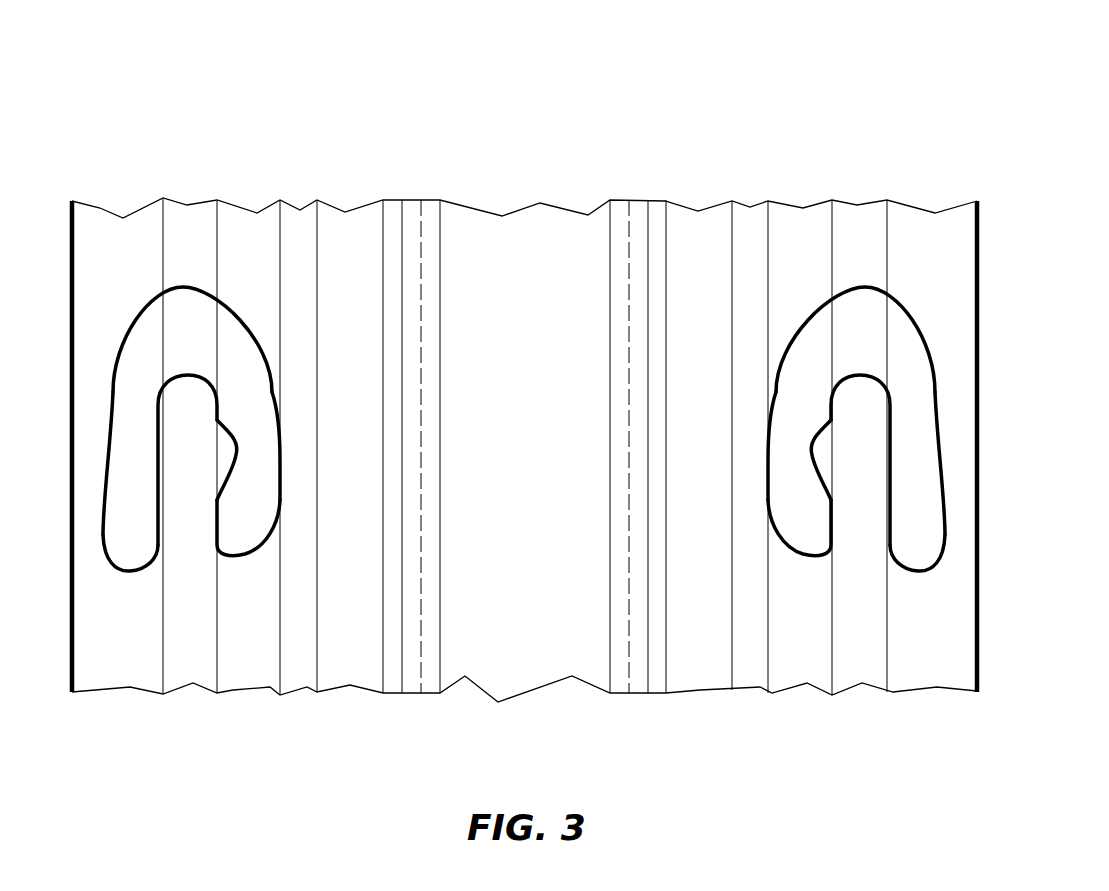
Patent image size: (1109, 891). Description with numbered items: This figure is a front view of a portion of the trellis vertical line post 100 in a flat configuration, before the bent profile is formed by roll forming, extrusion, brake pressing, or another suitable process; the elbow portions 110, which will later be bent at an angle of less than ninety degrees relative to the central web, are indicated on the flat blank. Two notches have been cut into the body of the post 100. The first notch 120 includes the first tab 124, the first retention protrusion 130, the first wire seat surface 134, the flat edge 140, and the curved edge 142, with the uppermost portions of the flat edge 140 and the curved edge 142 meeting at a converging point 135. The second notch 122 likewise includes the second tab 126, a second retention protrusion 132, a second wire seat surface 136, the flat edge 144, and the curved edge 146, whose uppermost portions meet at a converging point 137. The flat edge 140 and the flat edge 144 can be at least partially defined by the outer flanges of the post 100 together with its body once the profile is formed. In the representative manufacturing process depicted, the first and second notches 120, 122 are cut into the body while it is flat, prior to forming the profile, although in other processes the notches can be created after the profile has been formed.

The post 100 is at (622, 143).
The elbow portions 110 is at (703, 683).
The first notch 120 is at (128, 548).
The second notch 122 is at (917, 550).
The first tab 124 is at (182, 448).
The second tab 126 is at (848, 478).
The first retention protrusion 130 is at (227, 462).
The second retention protrusion 132 is at (823, 468).
The first wire seat surface 134 is at (112, 573).
The second wire seat surface 136 is at (907, 573).
The converging point 135 is at (173, 283).
The converging point 137 is at (865, 283).
The flat edge 140 is at (117, 423).
The curved edge 142 is at (267, 387).
The flat edge 144 is at (927, 410).
The curved edge 146 is at (775, 413).